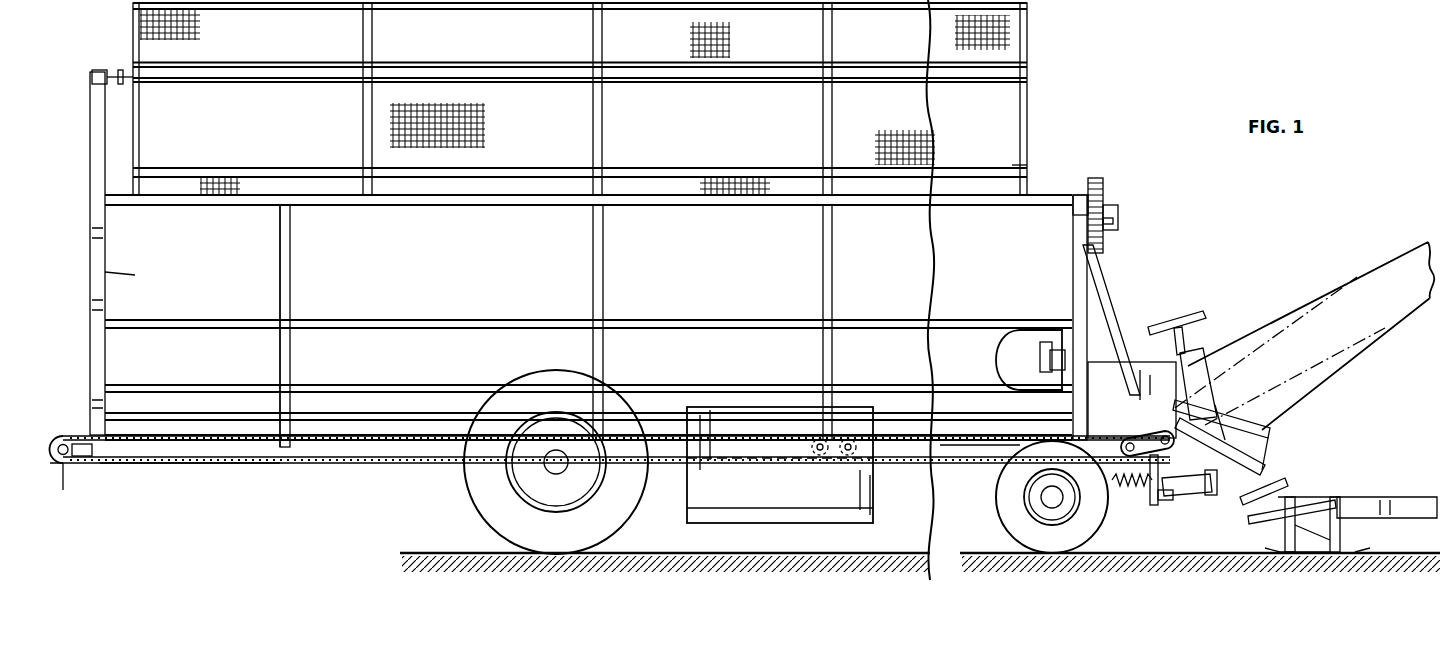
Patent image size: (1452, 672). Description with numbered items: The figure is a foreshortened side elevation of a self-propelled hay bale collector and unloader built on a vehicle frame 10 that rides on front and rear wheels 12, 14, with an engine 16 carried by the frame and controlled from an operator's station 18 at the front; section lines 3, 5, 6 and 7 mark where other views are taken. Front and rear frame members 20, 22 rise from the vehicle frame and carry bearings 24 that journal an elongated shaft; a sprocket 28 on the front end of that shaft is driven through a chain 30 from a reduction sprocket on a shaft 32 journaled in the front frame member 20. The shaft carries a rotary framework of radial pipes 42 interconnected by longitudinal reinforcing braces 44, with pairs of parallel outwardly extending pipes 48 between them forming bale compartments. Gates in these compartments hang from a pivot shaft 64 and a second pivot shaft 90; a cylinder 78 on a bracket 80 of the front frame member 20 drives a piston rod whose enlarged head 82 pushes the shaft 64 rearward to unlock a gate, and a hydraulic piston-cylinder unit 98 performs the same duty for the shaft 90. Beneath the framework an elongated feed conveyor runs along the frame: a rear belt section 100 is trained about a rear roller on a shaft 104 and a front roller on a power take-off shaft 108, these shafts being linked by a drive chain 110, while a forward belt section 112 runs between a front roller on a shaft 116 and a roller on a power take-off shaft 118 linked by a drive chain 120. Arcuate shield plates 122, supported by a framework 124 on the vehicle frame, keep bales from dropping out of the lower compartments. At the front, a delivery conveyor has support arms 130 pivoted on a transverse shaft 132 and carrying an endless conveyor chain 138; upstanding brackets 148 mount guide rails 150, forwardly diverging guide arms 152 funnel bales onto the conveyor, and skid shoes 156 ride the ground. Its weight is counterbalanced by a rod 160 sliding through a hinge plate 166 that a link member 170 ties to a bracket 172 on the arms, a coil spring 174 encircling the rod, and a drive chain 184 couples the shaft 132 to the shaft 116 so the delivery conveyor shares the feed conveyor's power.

The section line 3- 3 is at (80, 397).
The section line 5- 5 is at (112, 473).
The section line 6- 6 is at (80, 70).
The section line 7- 7 is at (155, 342).
The vehicle frame 10 is at (410, 447).
The front wheels 12 is at (1015, 530).
The rear wheels 14 is at (495, 510).
The engine 16 is at (860, 488).
The operator's station 18 is at (1180, 308).
The front frame member 20 is at (1098, 300).
The rear frame member 22 is at (100, 303).
The bearings 24 is at (1118, 208).
The sprocket 28 is at (1103, 198).
The chain 30 is at (1094, 178).
The shaft 32 is at (1118, 220).
The radial pipes 42 is at (134, 128).
The longitudinal reinforcing braces 44 is at (1012, 167).
The parallel pipes 48 is at (133, 27).
The pivot shaft 64 is at (996, 352).
The cylinder 78 is at (1057, 350).
The bracket 80 is at (1075, 375).
The enlarged head 82 is at (1044, 342).
The pivot shaft 90 is at (124, 70).
The hydraulic piston-cylinder unit 98 is at (100, 70).
The rear belt section 100 is at (72, 456).
The shaft 104 is at (61, 486).
The power take-off shaft 108 is at (818, 456).
The drive chain 110 is at (252, 458).
The forward belt section 112 is at (995, 435).
The shaft 116 is at (1190, 378).
The power take-off shaft 118 is at (856, 452).
The drive chain 120 is at (968, 450).
The arcuate shield plates 122 is at (135, 275).
The framework 124 is at (905, 290).
The conveyor support arms 130 is at (1258, 495).
The transverse shaft 132 is at (1200, 410).
The conveyor chain 138 is at (1272, 512).
The brackets 148 is at (1245, 425).
The guide rails 150 is at (1300, 497).
The guide arms 152 is at (1390, 502).
The skid shoes 156 is at (1370, 548).
The rod 160 is at (1156, 500).
The hinge plate 166 is at (1160, 500).
The link member 170 is at (1185, 488).
The bracket 172 is at (1212, 496).
The coil spring 174 is at (1120, 486).
The drive chain 184 is at (1128, 438).